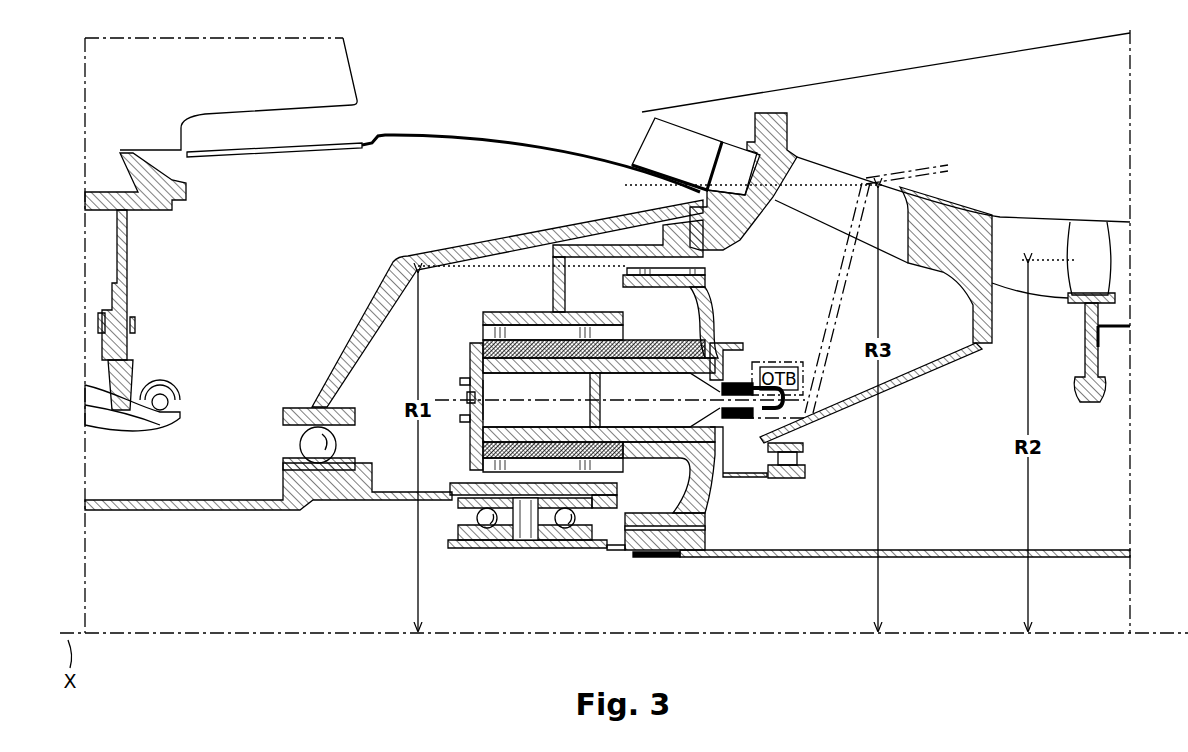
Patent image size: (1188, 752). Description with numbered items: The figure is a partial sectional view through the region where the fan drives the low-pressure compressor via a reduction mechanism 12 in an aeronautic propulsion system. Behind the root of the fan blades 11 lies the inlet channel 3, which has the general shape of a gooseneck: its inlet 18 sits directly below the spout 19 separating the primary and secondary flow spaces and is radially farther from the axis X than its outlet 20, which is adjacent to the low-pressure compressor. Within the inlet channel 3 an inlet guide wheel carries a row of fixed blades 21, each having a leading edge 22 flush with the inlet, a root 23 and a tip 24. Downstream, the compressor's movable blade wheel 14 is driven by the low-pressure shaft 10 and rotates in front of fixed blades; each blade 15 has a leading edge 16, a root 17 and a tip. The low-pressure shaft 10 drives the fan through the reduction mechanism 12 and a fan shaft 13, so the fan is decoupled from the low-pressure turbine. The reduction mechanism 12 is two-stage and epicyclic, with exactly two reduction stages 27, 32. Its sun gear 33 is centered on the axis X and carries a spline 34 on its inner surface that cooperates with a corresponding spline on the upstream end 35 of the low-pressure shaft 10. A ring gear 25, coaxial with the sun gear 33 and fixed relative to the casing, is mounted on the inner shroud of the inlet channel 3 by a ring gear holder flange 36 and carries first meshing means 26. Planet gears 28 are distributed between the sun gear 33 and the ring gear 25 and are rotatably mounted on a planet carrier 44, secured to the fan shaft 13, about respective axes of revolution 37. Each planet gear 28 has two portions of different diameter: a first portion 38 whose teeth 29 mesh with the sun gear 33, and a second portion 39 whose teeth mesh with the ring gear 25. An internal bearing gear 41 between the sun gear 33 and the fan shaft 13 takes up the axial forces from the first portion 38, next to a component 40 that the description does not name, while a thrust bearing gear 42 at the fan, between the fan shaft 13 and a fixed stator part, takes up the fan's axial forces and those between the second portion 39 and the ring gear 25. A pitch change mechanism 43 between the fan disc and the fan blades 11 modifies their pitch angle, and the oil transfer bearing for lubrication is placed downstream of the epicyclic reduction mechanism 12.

The inlet channel 3 is at (733, 168).
The low-pressure shaft 10 is at (958, 557).
The fan blades 11 is at (238, 94).
The reduction mechanism 12 is at (472, 297).
The fan shaft 13 is at (196, 510).
The movable blade wheel 14 is at (1108, 362).
The blade 15 is at (1107, 248).
The leading edge 16 is at (1068, 266).
The root 17 is at (1110, 290).
The inlet 18 is at (625, 148).
The spout 19 is at (625, 106).
The outlet 20 is at (1060, 240).
The fixed blades 21 is at (677, 154).
The leading edge 22 is at (635, 138).
The root 23 is at (658, 170).
The tip 24 is at (699, 120).
The ring gear 25 is at (504, 312).
The first meshing means 26 is at (623, 318).
The reduction stage 27 is at (695, 563).
The planet gears 28 is at (716, 320).
The first series of teeth 29 is at (705, 270).
The reduction stage 32 is at (480, 555).
The sun gear 33 is at (645, 558).
The spline 34 is at (622, 555).
The upstream end 35 is at (668, 558).
The ring gear holder flange 36 is at (570, 252).
The axis of revolution 37 is at (465, 397).
The first portion 38 is at (705, 281).
The second portion 39 is at (483, 334).
The bearing spacer 40 is at (527, 545).
The internal bearing gear 41 is at (563, 545).
The thrust bearing gear 42 is at (338, 380).
The pitch change mechanism 43 is at (132, 432).
The planet carrier 44 is at (740, 345).